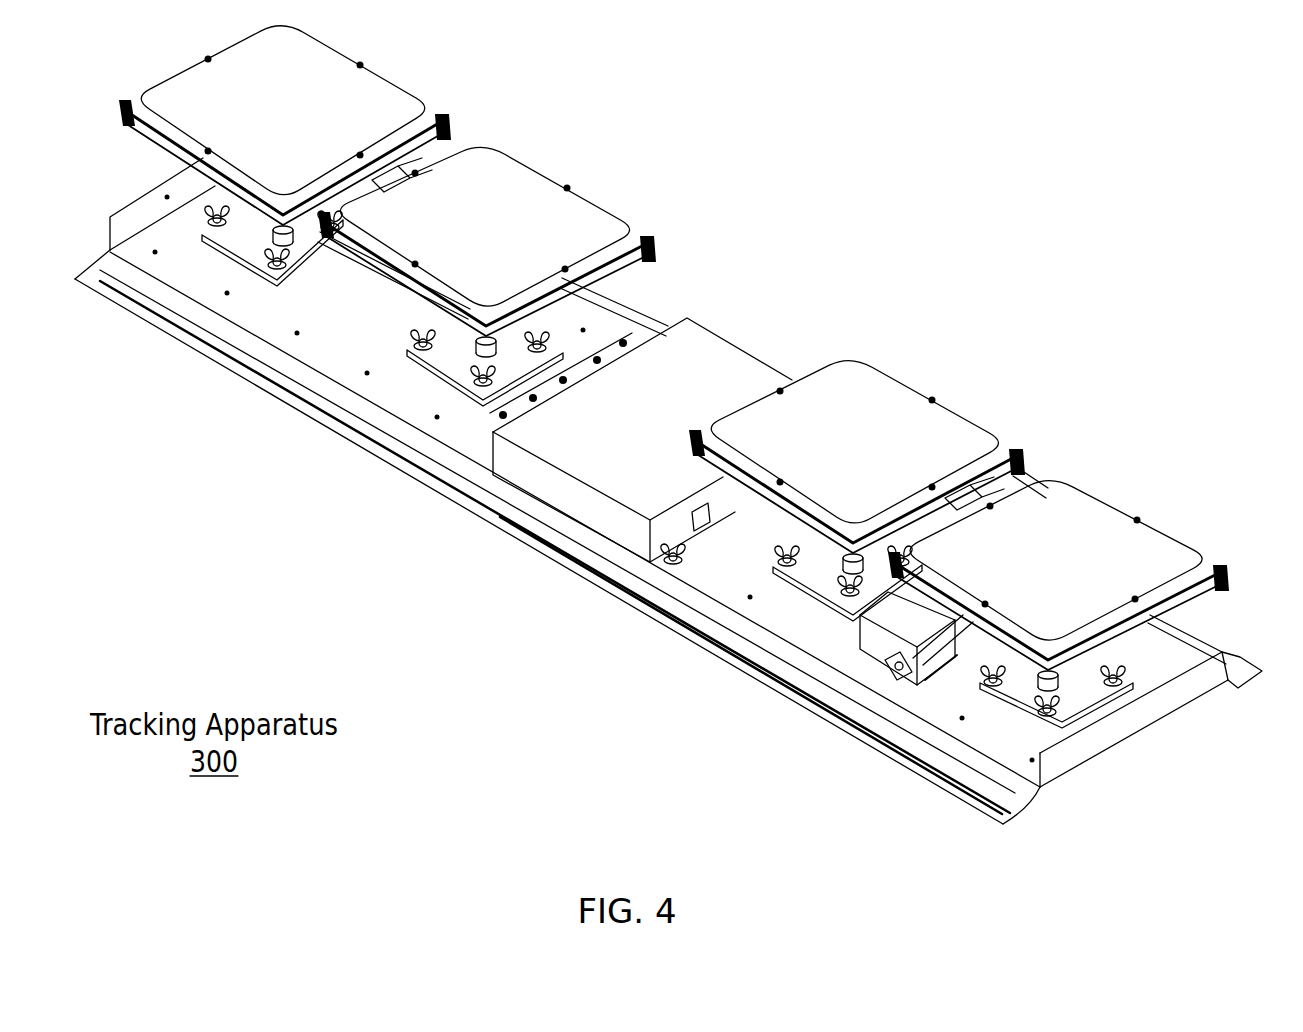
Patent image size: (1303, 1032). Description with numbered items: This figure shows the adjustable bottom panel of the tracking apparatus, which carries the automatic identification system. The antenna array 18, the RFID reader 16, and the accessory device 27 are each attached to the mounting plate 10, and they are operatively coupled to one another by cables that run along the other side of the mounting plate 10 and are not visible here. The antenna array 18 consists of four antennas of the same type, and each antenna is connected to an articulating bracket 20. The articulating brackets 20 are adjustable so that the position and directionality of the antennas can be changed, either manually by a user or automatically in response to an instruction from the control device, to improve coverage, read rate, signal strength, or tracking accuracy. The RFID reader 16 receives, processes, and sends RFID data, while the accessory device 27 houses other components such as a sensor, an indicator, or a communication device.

The mounting plate 10 is at (198, 276).
The RFID reader 16 is at (683, 366).
The antenna array 18 is at (405, 105).
The articulating bracket 20 is at (1020, 727).
The accessory device 27 is at (887, 652).